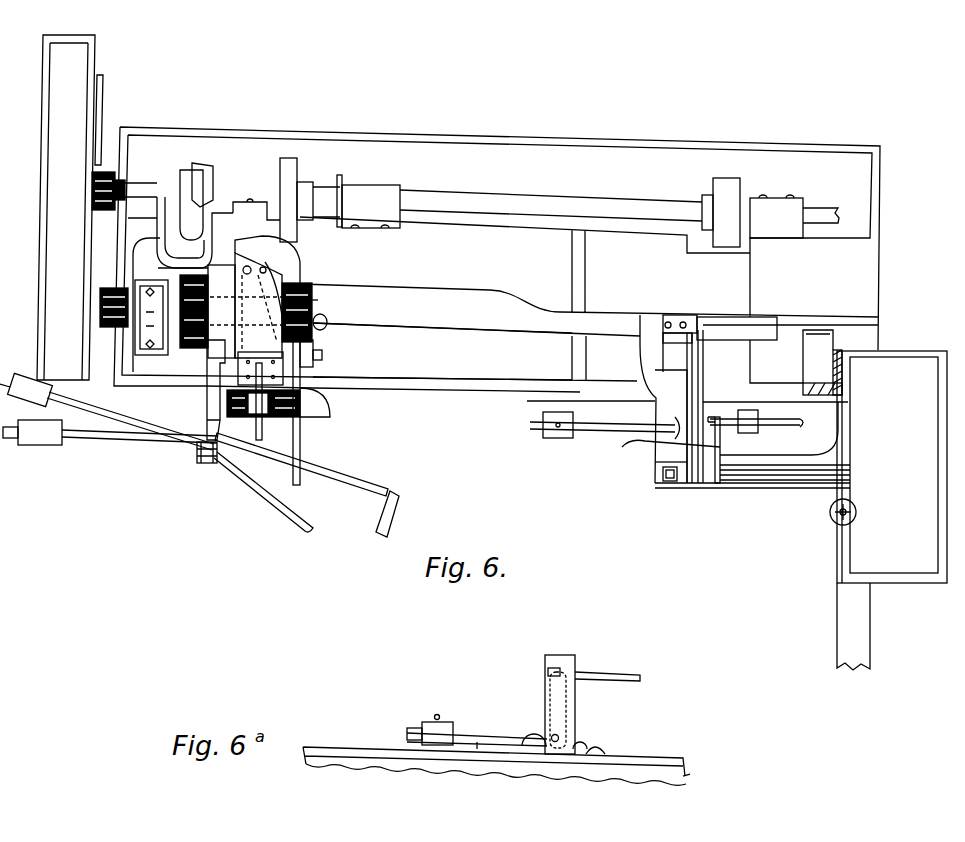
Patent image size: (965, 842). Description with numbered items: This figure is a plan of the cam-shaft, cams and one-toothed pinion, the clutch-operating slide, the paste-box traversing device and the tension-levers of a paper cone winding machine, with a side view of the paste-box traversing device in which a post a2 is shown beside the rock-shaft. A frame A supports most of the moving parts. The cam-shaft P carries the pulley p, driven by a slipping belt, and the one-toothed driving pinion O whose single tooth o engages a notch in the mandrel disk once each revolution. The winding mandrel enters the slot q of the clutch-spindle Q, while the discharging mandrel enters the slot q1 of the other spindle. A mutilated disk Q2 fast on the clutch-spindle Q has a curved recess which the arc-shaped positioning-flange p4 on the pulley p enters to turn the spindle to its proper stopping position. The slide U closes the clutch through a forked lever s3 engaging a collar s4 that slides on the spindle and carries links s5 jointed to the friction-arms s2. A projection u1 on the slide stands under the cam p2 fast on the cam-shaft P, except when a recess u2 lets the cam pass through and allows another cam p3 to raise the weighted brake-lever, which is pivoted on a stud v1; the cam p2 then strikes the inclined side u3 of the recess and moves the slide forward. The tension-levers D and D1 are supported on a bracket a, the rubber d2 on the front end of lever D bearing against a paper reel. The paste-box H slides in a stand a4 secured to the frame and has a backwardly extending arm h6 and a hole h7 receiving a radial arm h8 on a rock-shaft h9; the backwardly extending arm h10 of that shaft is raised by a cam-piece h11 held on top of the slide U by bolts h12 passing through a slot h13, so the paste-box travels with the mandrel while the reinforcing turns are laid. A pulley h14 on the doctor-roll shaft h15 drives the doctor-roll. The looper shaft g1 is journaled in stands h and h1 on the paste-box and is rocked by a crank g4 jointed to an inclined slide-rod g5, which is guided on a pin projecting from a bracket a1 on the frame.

In FIG. 6, the frame A is at (643, 147).
In FIG. 6A, the frame A is at (684, 770).
In FIG. 6, the cam-shaft P is at (497, 203).
In FIG. 6, the pulley p is at (40, 250).
In FIG. 6, the cam p2 is at (205, 190).
In FIG. 6, the cam p3 is at (300, 167).
In FIG. 6, the arc-shaped positioning-flange p4 is at (100, 105).
In FIG. 6, the projection u1 is at (163, 193).
In FIG. 6, the recess u2 is at (198, 233).
In FIG. 6, the inclined side u3 is at (237, 201).
In FIG. 6, the tooth o is at (712, 208).
In FIG. 6, the one-toothed driving pinion O is at (740, 188).
In FIG. 6, the friction-arms s2 is at (245, 268).
In FIG. 6, the forked lever s3 is at (314, 285).
In FIG. 6, the collar s4 is at (315, 302).
In FIG. 6, the links s5 is at (303, 270).
In FIG. 6, the slot q is at (333, 323).
In FIG. 6, the clutch-spindle Q is at (327, 324).
In FIG. 6, the mutilated disk Q2 is at (80, 379).
In FIG. 6, the slot q1 is at (22, 431).
In FIG. 6, the slide U is at (473, 322).
In FIG. 6A, the slide U is at (663, 763).
In FIG. 6, the bracket a is at (207, 412).
In FIG. 6, the bracket a1 is at (700, 489).
In FIG. 6A, the post a2 is at (576, 697).
In FIG. 6, the stand a4 is at (844, 383).
In FIG. 6, the paste-box H is at (892, 467).
In FIG. 6, the tension-lever D is at (328, 483).
In FIG. 6, the tension-lever D1 is at (192, 452).
In FIG. 6, the rubber d2 is at (398, 498).
In FIG. 6, the stud v1 is at (301, 450).
In FIG. 6, the stand h is at (733, 488).
In FIG. 6, the stand h1 is at (840, 494).
In FIG. 6, the arm h6 is at (787, 473).
In FIG. 6, the hole h7 is at (670, 488).
In FIG. 6A, the hole h7 is at (547, 673).
In FIG. 6, the radial arm h8 is at (663, 474).
In FIG. 6A, the radial arm h8 is at (558, 668).
In FIG. 6, the rock-shaft h9 is at (635, 440).
In FIG. 6A, the rock-shaft h9 is at (547, 741).
In FIG. 6, the arm h10 is at (585, 432).
In FIG. 6A, the arm h10 is at (478, 742).
In FIG. 6, the cam-piece h11 is at (700, 323).
In FIG. 6A, the cam-piece h11 is at (604, 749).
In FIG. 6, the bolts h12 is at (687, 322).
In FIG. 6A, the bolts h12 is at (582, 738).
In FIG. 6, the slot h13 is at (683, 331).
In FIG. 6, the pulley h14 is at (750, 416).
In FIG. 6, the shaft h15 is at (775, 429).
In FIG. 6, the shaft g1 is at (773, 489).
In FIG. 6, the crank g4 is at (703, 460).
In FIG. 6, the inclined slide-rod g5 is at (671, 454).